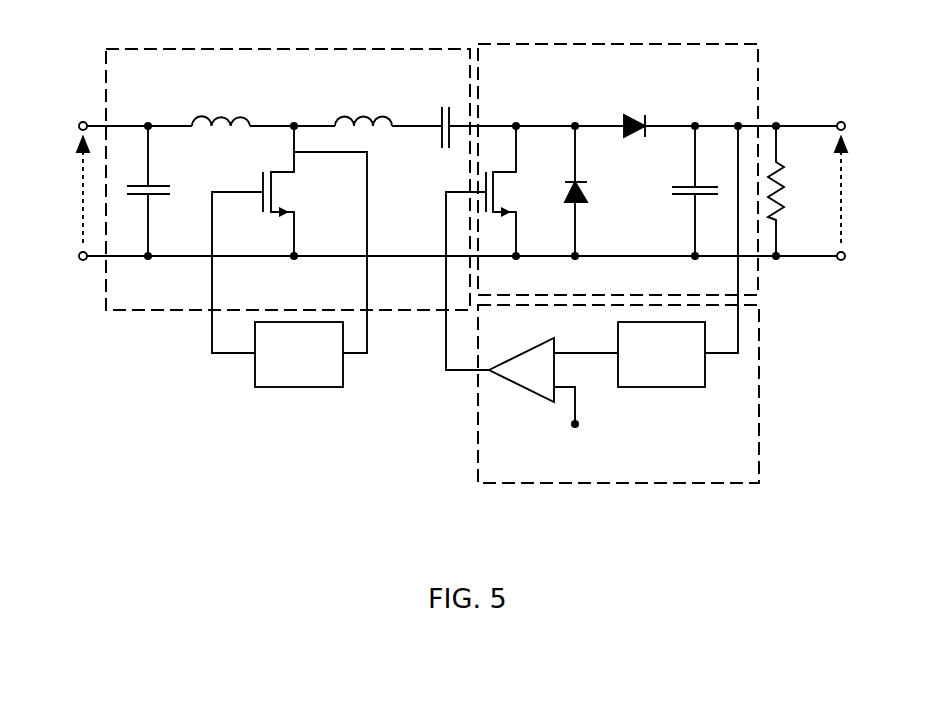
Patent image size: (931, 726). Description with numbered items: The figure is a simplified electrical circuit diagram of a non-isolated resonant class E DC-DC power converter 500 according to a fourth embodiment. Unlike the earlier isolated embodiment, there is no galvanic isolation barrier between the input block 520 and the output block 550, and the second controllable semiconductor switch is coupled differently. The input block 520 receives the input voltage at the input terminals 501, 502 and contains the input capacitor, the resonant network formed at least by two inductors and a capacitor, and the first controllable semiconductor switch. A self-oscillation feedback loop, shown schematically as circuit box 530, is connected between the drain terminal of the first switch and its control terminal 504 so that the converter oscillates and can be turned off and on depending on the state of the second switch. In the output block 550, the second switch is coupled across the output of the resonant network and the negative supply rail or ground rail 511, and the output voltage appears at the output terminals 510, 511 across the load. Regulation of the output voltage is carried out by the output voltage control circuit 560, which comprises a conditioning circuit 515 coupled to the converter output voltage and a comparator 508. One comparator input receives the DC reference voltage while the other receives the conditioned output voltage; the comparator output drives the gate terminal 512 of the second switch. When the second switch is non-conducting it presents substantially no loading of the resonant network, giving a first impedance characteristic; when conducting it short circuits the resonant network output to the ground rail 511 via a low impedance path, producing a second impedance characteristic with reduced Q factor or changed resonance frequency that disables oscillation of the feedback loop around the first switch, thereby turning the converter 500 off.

The non-isolated resonant class E DC-DC power converter 500 is at (461, 261).
The positive input terminal 501 is at (80, 118).
The negative input terminal 502 is at (115, 277).
The control terminal of switch S1 504 is at (275, 239).
The comparator 508 is at (550, 384).
The positive output terminal 510 is at (809, 108).
The negative supply rail or ground rail 511 is at (809, 277).
The gate terminal of semiconductor switch S2 512 is at (448, 248).
The conditioning circuit 515 is at (687, 376).
The input block 520 is at (279, 161).
The self-oscillation feedback loop 530 is at (285, 376).
The output block 550 is at (618, 148).
The output voltage control circuit 560 is at (592, 413).